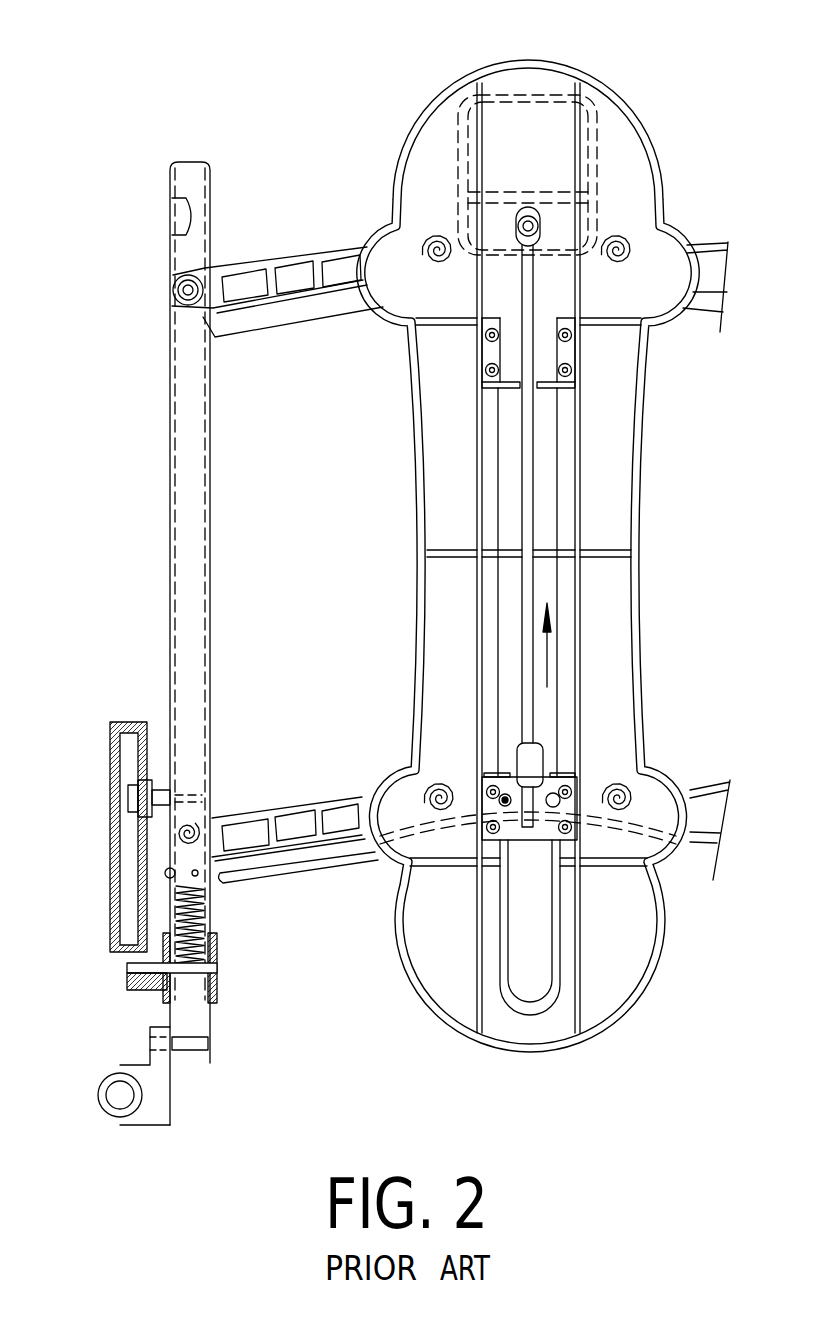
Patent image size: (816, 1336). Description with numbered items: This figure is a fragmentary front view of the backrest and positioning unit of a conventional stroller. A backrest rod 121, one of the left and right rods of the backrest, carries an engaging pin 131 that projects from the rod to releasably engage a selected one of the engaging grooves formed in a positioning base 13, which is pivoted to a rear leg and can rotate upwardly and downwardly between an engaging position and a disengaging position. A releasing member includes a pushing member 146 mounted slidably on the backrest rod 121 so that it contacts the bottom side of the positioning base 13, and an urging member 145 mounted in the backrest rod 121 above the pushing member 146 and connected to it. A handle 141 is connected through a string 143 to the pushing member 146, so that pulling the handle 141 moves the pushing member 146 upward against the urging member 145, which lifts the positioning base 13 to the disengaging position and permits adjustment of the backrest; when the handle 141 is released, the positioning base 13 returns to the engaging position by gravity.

The positioning base 13 is at (110, 733).
The backrest rod 121 is at (206, 427).
The engaging pin 131 is at (170, 787).
The handle 141 is at (560, 195).
The string 143 is at (507, 797).
The urging member 145 is at (210, 913).
The pushing member 146 is at (145, 983).